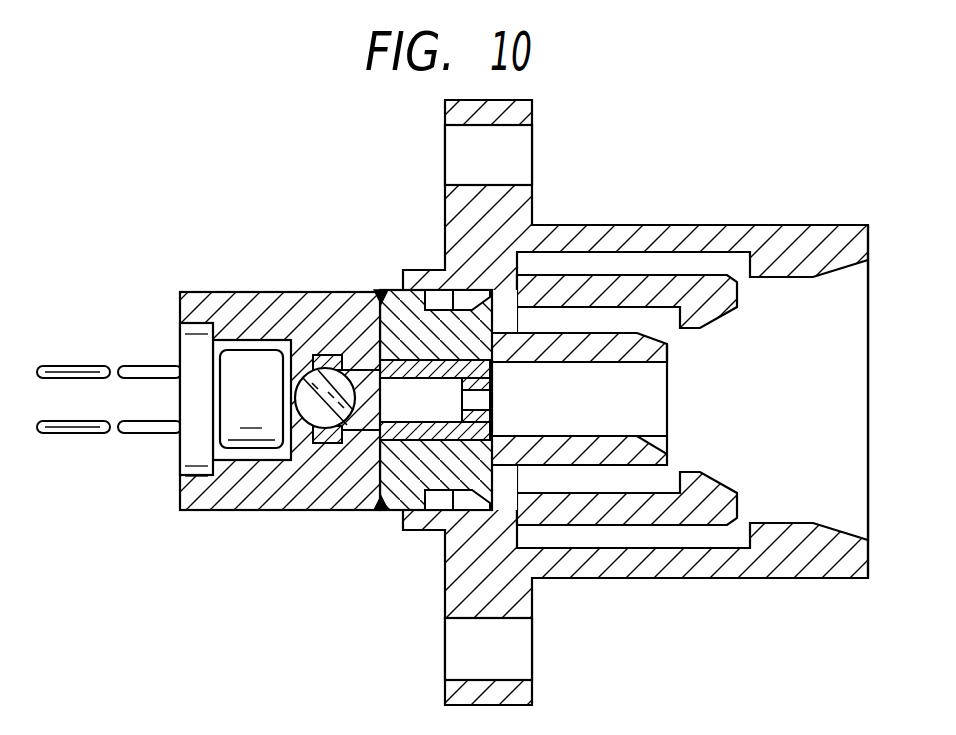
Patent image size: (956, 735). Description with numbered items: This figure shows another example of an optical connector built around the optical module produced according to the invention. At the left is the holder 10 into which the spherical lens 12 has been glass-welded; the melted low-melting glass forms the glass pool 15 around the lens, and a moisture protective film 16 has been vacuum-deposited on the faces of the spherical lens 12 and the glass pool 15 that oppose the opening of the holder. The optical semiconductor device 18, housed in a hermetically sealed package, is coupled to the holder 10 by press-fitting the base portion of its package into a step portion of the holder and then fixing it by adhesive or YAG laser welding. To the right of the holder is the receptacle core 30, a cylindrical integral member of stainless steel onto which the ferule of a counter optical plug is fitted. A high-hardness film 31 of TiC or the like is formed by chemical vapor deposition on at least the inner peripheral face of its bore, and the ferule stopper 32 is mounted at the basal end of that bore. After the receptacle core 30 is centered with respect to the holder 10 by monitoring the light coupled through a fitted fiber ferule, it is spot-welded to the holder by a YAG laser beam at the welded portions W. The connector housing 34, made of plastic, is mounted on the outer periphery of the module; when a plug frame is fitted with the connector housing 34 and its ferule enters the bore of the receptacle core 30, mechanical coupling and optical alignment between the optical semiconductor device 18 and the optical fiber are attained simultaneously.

The holder 10 is at (248, 305).
The spherical lens 12 is at (312, 420).
The glass pool 15 is at (338, 352).
The moisture protective film 16 is at (310, 426).
The optical semiconductor device 18 is at (238, 413).
The receptacle core 30 is at (408, 333).
The high-hardness film 31 is at (600, 430).
The ferule stopper 32 is at (392, 508).
The connector housing 34 is at (500, 587).
The welded portions W is at (381, 290).